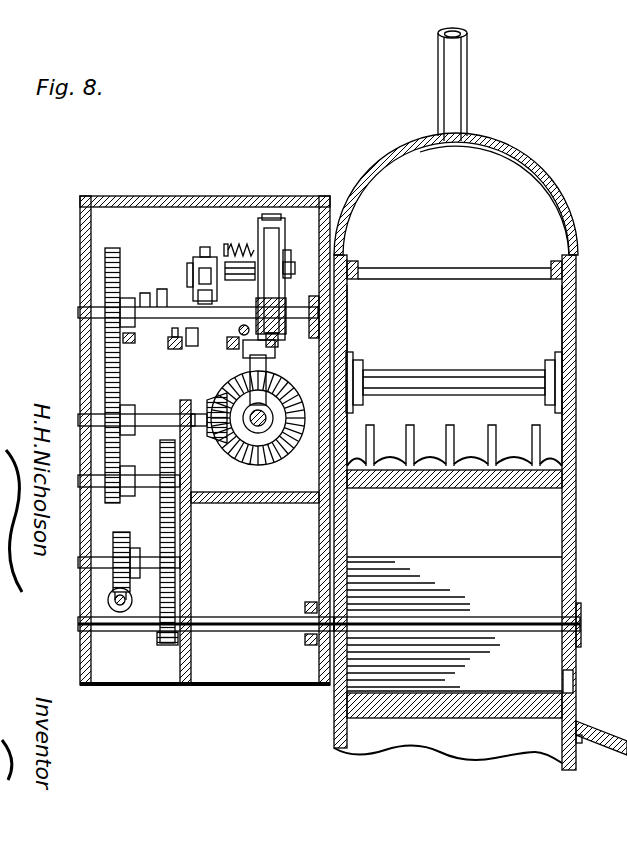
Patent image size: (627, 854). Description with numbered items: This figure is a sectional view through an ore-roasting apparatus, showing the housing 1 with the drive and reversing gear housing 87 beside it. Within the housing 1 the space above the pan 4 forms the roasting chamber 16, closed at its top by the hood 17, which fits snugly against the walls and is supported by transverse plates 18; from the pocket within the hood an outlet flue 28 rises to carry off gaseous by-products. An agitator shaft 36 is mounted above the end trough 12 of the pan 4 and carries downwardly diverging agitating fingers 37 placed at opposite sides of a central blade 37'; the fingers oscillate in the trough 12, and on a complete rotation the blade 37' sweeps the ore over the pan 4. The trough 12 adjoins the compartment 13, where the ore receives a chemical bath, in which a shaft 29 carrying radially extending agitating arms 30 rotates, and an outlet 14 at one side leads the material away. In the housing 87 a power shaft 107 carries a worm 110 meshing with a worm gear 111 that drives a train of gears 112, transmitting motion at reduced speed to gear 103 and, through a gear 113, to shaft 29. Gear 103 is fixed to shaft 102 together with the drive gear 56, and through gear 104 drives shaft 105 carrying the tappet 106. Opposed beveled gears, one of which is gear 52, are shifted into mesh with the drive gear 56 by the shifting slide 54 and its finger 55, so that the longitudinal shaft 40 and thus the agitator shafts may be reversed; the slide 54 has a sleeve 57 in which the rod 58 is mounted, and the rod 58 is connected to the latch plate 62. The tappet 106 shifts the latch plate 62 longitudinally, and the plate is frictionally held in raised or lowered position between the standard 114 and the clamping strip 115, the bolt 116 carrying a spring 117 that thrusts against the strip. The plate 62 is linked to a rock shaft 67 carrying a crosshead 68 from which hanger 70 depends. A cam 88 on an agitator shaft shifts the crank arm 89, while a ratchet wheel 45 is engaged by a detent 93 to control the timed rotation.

The housing 1 is at (577, 528).
The pan 4 is at (522, 482).
The end trough 12 is at (467, 470).
The compartment 13 is at (454, 607).
The outlet 14 is at (626, 712).
The roasting chamber 16 is at (454, 375).
The hood 17 is at (503, 148).
The transverse plates 18 is at (537, 198).
The outlet flue 28 is at (468, 80).
The shaft 29 is at (283, 633).
The agitating arms 30 is at (538, 626).
The agitator shaft 36 is at (500, 369).
The agitating fingers 37 is at (431, 481).
The central blade 37' is at (540, 486).
The longitudinal shaft 40 is at (272, 448).
The ratchet wheel 45 is at (186, 345).
The beveled gear 52 is at (262, 436).
The shifting slide 54 is at (270, 350).
The finger 55 is at (249, 382).
The drive gear 56 is at (224, 440).
The sleeve 57 is at (228, 317).
The rod 58 is at (238, 338).
The latch plate 62 is at (290, 268).
The rock shaft 67 is at (233, 268).
The crosshead 68 is at (199, 258).
The hanger 70 is at (203, 304).
The housing 87 is at (88, 686).
The cam 88 is at (104, 339).
The crank arm 89 is at (148, 292).
The detent 93 is at (176, 342).
The shaft 102 is at (152, 432).
The gear 103 is at (105, 405).
The gear 104 is at (104, 270).
The shaft 105 is at (320, 314).
The tappet 106 is at (352, 269).
The power shaft 107 is at (132, 600).
The worm 110 is at (122, 613).
The worm gear 111 is at (113, 540).
The train of gears 112 is at (113, 503).
The gear 113 is at (167, 646).
The standard 114 is at (290, 235).
The clamping strip 115 is at (258, 232).
The bolt 116 is at (283, 252).
The spring 117 is at (238, 252).